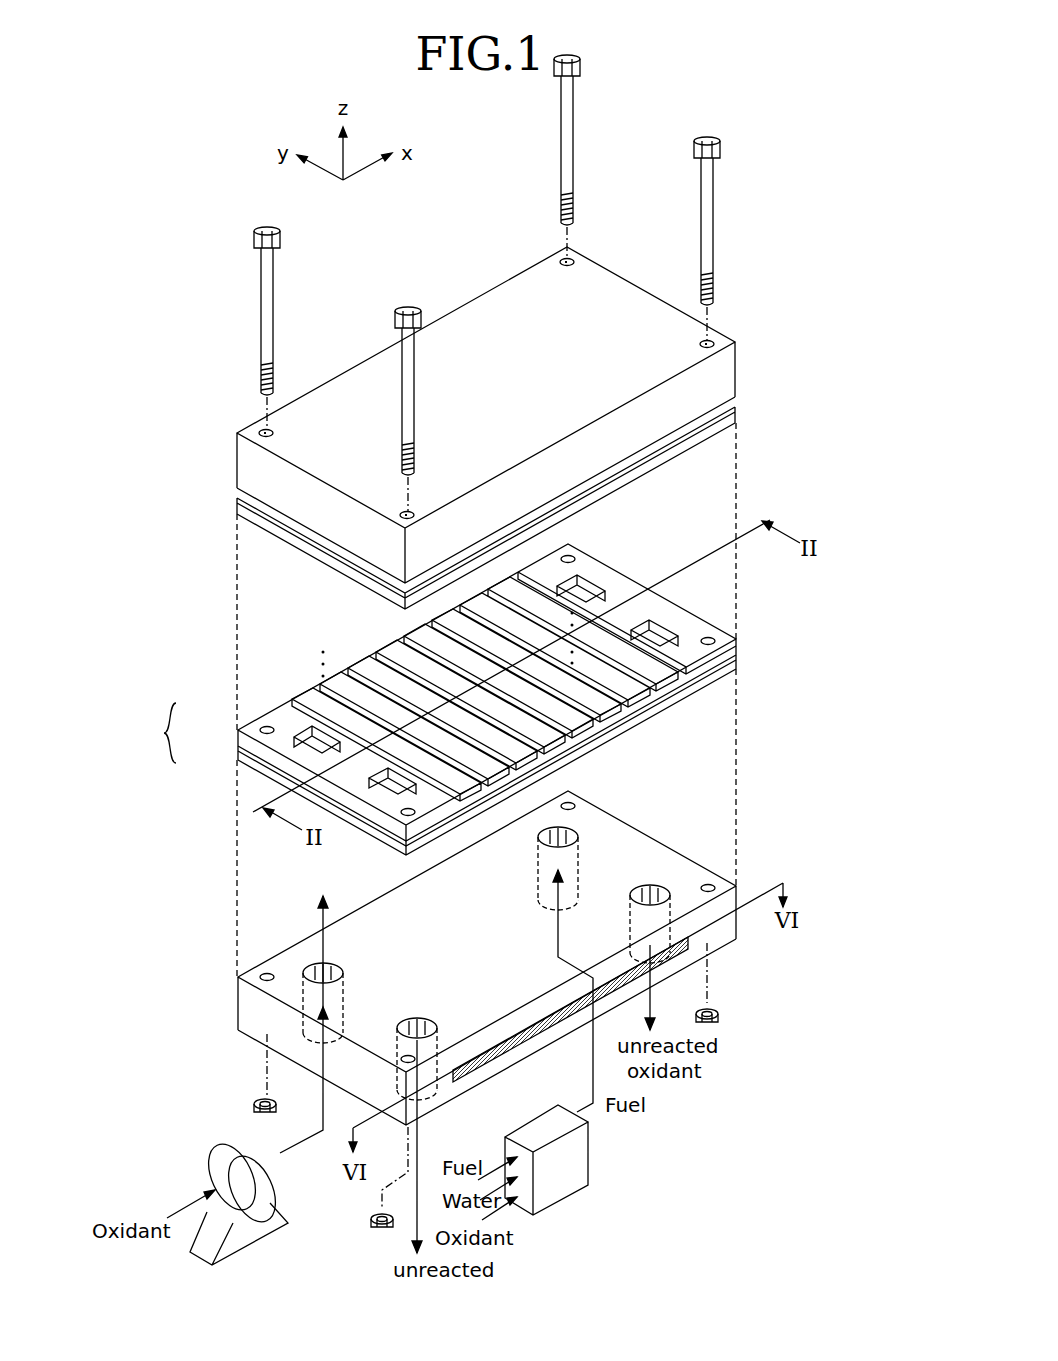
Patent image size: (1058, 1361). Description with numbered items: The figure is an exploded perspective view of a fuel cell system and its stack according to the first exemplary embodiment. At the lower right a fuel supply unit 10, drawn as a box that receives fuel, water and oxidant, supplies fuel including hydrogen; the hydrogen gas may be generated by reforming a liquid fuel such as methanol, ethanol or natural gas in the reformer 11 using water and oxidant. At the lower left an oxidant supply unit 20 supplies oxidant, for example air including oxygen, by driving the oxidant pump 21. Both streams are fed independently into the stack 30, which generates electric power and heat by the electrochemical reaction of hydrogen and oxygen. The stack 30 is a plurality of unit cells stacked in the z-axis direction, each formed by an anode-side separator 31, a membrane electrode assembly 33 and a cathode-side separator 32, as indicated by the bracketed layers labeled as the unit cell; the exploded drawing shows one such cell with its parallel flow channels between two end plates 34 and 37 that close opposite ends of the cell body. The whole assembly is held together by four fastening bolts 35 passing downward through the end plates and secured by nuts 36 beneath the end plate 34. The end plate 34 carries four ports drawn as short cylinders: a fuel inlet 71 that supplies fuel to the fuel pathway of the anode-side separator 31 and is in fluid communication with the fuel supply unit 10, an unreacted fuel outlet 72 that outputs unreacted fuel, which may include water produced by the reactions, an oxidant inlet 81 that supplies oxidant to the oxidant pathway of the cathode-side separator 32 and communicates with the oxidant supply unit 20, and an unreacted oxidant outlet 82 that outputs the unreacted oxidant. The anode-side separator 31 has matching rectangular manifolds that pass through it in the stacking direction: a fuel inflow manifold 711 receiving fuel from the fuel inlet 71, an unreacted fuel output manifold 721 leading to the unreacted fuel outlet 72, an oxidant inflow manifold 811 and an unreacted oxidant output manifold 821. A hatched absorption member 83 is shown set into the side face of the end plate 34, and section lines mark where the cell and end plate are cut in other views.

The fuel supply unit 10 is at (592, 1169).
The reformer 11 is at (560, 1183).
The oxidant supply unit 20 is at (238, 1193).
The oxidant pump 21 is at (265, 1185).
The stack 30 is at (481, 701).
The anode-side separator 31 is at (240, 733).
The cathode-side separator 32 is at (240, 756).
The membrane electrode assembly 33 is at (240, 748).
The end plate 34 is at (515, 943).
The fastening bolt 35 is at (268, 283).
The nut 36 is at (720, 1020).
The end plate 37 is at (722, 385).
The fuel inlet 71 is at (558, 833).
The unreacted fuel outlet 72 is at (415, 1023).
The oxidant inlet 81 is at (313, 967).
The unreacted oxidant outlet 82 is at (652, 892).
The absorption member 83 is at (542, 1030).
The fuel inflow manifold 711 is at (577, 578).
The unreacted fuel output manifold 721 is at (388, 793).
The oxidant inflow manifold 811 is at (310, 744).
The unreacted oxidant output manifold 821 is at (657, 620).